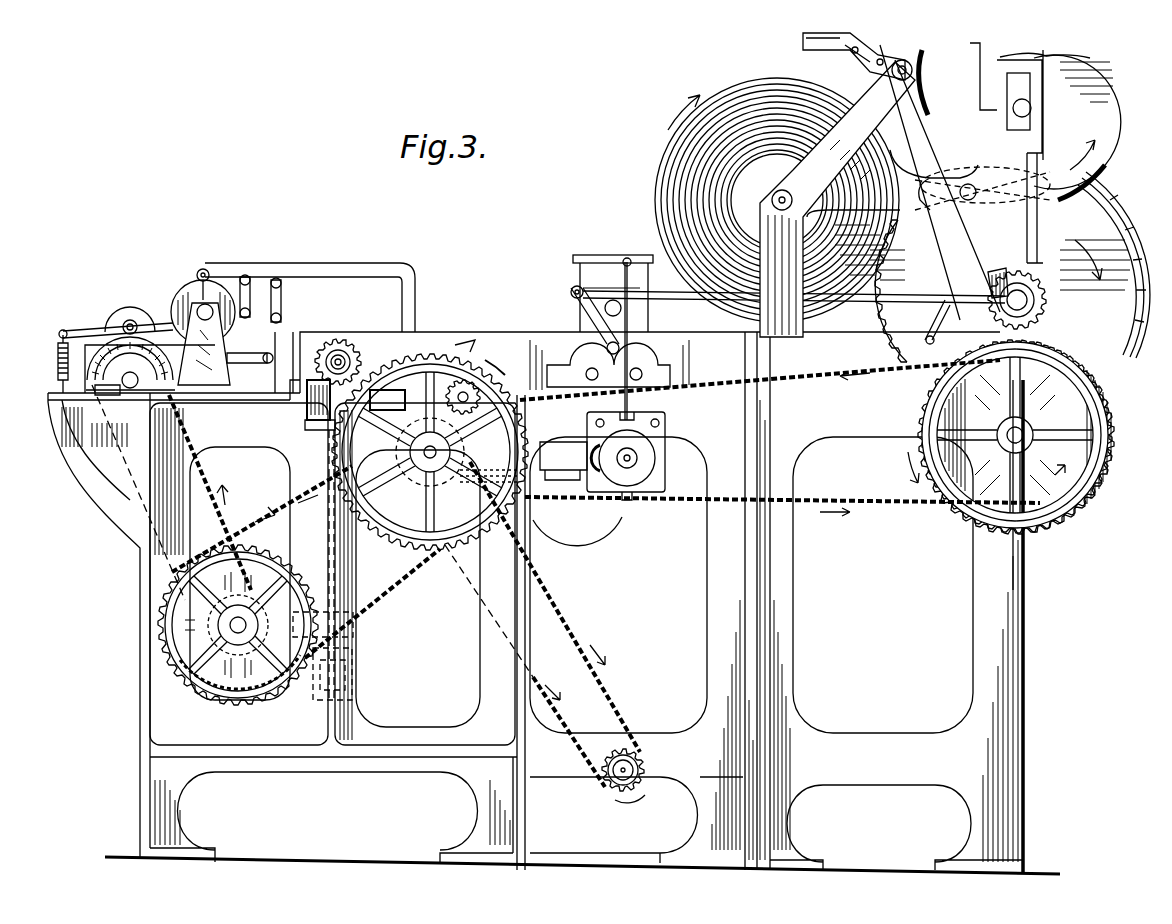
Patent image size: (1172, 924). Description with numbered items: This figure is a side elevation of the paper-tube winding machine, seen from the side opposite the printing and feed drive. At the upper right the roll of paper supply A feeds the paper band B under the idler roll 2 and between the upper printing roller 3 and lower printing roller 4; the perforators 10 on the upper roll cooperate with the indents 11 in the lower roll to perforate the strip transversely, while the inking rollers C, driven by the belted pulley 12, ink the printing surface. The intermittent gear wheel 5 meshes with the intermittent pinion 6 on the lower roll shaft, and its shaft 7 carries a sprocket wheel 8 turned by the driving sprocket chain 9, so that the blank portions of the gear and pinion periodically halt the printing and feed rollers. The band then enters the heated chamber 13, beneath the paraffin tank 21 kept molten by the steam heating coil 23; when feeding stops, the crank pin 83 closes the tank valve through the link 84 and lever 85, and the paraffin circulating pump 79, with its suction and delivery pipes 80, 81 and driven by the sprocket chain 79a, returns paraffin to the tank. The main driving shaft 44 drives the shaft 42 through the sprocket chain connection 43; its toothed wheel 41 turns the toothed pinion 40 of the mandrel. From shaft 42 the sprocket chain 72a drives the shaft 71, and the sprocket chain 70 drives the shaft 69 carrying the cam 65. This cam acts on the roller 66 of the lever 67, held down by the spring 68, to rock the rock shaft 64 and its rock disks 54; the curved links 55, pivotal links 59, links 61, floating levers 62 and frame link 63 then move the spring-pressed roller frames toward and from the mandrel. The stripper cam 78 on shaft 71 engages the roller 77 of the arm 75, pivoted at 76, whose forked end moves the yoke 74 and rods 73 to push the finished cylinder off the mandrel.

The idler roll 2 is at (958, 185).
The upper printing roller 3 is at (1115, 103).
The lower printing roller 4 is at (1085, 228).
The intermittent gear wheel 5 is at (965, 525).
The intermittent pinion 6 is at (1048, 302).
The shaft 7 is at (1040, 446).
The sprocket wheel 8 is at (1057, 520).
The driving sprocket chain 9 is at (912, 505).
The perforators 10 is at (930, 40).
The indents 11 is at (935, 322).
The pulley 12 is at (890, 70).
The heated chamber 13 is at (609, 363).
The paraffin tank 21 is at (585, 283).
The steam heating coil 23 is at (598, 316).
The toothed pinion 40 is at (345, 340).
The toothed wheel 41 is at (432, 355).
The shaft 42 is at (452, 452).
The sprocket chain connection 43 is at (555, 650).
The main driving shaft 44 is at (640, 762).
The rock disks 54 is at (190, 296).
The curved links 55 is at (315, 260).
The pivotal links 59 is at (250, 345).
The links 61 is at (205, 270).
The floating levers 62 is at (277, 280).
The link 63 is at (252, 310).
The rock shaft 64 is at (204, 333).
The cam 65 is at (145, 388).
The roller 66 is at (130, 320).
The lever 67 is at (90, 328).
The spring 68 is at (55, 362).
The shaft 69 is at (140, 378).
The sprocket chain 70 is at (200, 480).
The shaft 71 is at (228, 628).
The sprocket chain 72a is at (306, 562).
The rods 73 is at (305, 398).
The yoke 74 is at (318, 430).
The arm 75 is at (322, 544).
The pivot 76 is at (353, 672).
The roller 77 is at (354, 628).
The stripper cam 78 is at (255, 690).
The paraffin circulating pump 79 is at (645, 445).
The sprocket chain 79a is at (575, 445).
The suction pipe 80 is at (585, 548).
The delivery pipe 81 is at (630, 348).
The crank pin 83 is at (1003, 270).
The link 84 is at (880, 300).
The lever 85 is at (600, 330).
The roll of paper supply A is at (665, 163).
The paper band B is at (903, 182).
The inking rollers C is at (920, 50).